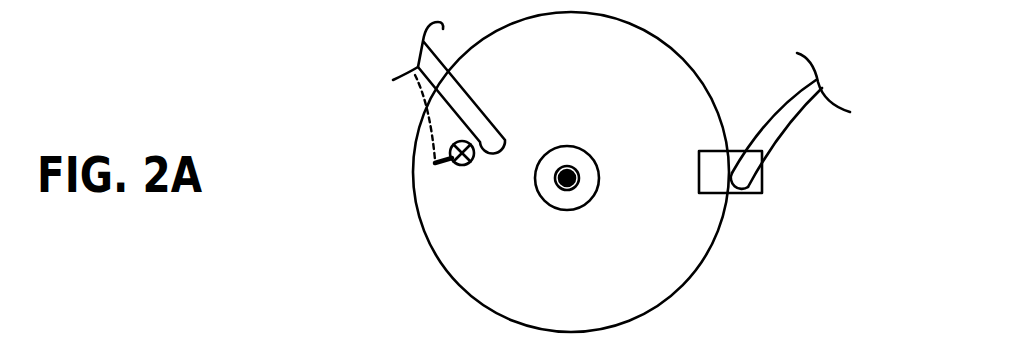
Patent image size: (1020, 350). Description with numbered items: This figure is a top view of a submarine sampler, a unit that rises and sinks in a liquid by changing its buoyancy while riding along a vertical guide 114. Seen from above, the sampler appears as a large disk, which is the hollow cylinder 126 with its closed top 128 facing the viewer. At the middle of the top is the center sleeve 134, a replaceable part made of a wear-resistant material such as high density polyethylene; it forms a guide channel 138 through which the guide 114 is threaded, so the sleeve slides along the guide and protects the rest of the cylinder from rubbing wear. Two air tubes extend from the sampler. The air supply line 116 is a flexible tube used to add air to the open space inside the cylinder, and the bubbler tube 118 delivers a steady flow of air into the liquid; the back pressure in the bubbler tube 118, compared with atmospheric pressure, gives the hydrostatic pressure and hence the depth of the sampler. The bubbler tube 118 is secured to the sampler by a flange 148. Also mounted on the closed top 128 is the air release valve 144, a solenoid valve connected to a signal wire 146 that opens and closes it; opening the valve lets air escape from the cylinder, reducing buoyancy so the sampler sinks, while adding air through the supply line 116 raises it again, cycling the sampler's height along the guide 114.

The guide 114 is at (553, 180).
The air supply line 116 is at (473, 113).
The bubbler tube 118 is at (757, 142).
The hollow cylinder 126 is at (482, 303).
The closed top 128 is at (468, 260).
The center sleeve 134 is at (582, 162).
The guide channel 138 is at (572, 187).
The air release valve 144 is at (437, 167).
The signal wire 146 is at (435, 145).
The flange 148 is at (727, 193).